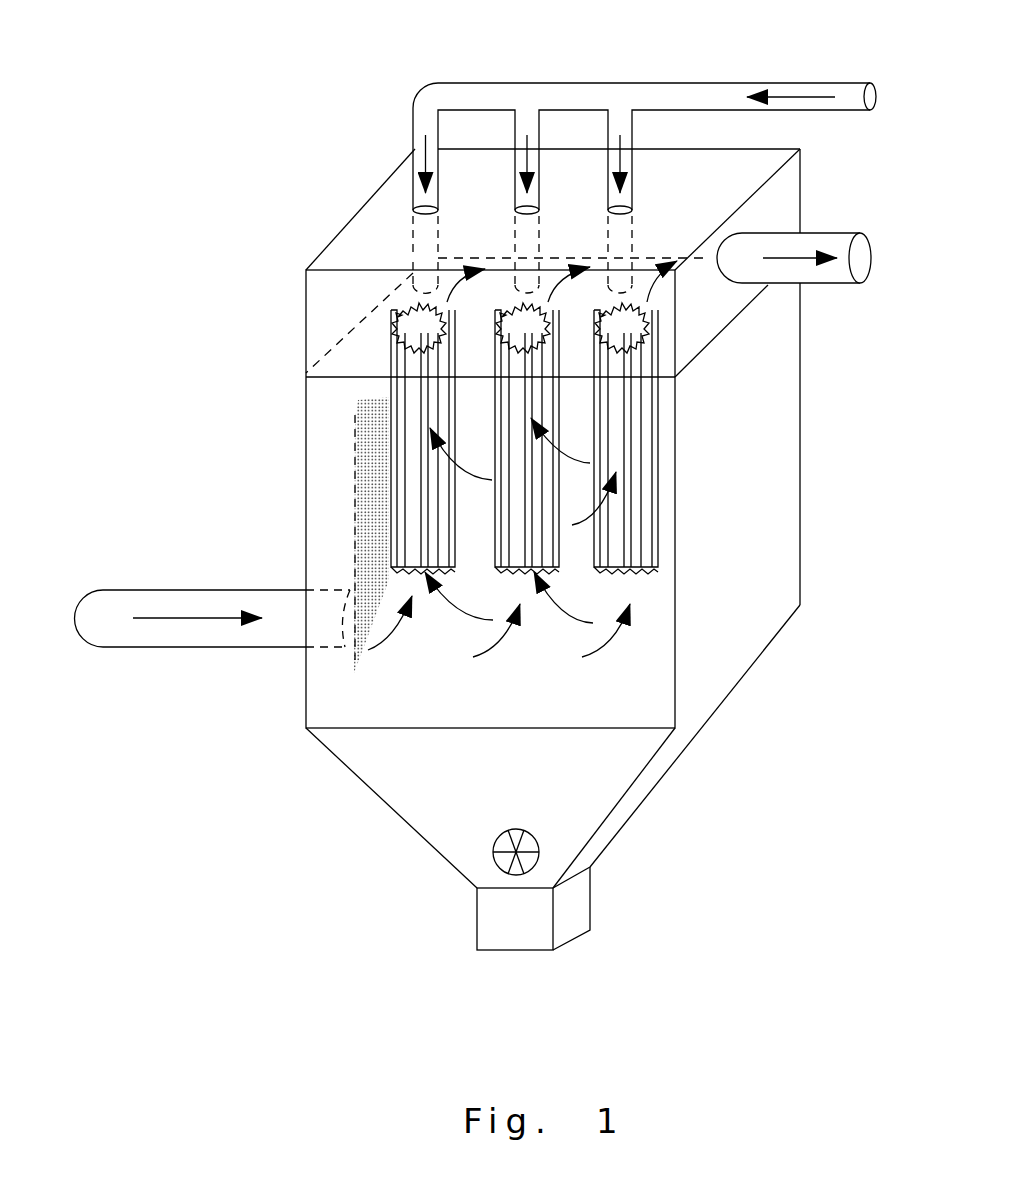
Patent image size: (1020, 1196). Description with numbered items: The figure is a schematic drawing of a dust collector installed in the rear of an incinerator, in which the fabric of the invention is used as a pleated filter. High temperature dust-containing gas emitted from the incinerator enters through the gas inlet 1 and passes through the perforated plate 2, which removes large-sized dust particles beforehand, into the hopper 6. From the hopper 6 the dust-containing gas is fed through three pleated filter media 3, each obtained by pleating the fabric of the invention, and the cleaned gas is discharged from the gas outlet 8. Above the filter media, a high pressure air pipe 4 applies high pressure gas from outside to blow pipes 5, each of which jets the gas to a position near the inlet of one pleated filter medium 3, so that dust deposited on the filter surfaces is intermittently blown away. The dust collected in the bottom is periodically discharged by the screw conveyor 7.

The gas inlet 1 is at (217, 585).
The perforated plate 2 is at (363, 500).
The pleated filter medium 3 is at (415, 415).
The high pressure air pipe 4 is at (585, 98).
The blow pipe 5 is at (413, 245).
The hopper 6 is at (735, 475).
The screw conveyor 7 is at (490, 853).
The gas outlet 8 is at (820, 232).